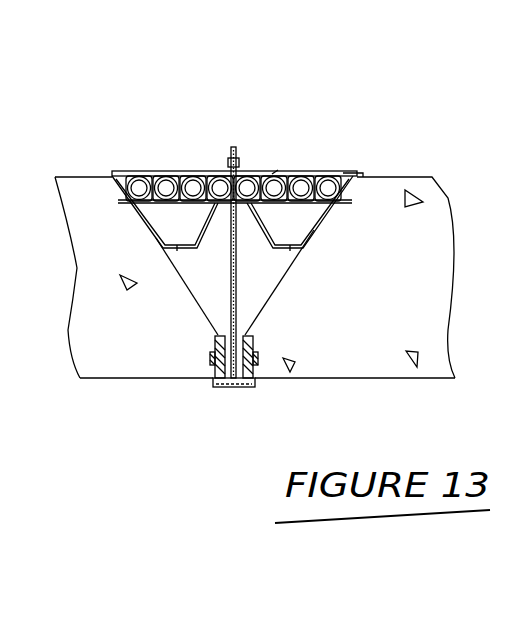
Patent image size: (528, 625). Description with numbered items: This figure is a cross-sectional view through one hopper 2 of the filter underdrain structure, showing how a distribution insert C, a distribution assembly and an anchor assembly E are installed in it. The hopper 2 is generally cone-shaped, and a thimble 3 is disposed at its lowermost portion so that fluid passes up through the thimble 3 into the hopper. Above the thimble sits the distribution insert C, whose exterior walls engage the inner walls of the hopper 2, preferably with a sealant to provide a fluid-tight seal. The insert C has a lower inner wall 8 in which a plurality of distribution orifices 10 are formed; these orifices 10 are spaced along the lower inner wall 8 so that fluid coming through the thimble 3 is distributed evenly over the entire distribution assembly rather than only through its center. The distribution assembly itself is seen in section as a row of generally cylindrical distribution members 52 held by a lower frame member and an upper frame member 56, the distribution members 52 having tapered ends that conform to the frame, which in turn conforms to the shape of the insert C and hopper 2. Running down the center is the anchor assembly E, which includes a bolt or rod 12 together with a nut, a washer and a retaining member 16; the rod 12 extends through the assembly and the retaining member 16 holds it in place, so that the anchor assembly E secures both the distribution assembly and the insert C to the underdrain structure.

The hopper 2 is at (257, 302).
The thimble 3 is at (213, 378).
The lower inner wall 8 is at (192, 257).
The distribution orifices 10 is at (182, 248).
The bolt or rod 12 is at (237, 243).
The retaining member 16 is at (245, 387).
The distribution members 52 is at (310, 173).
The upper frame member 56 is at (331, 170).
The distribution insert C is at (273, 172).
The anchor assembly E is at (237, 160).